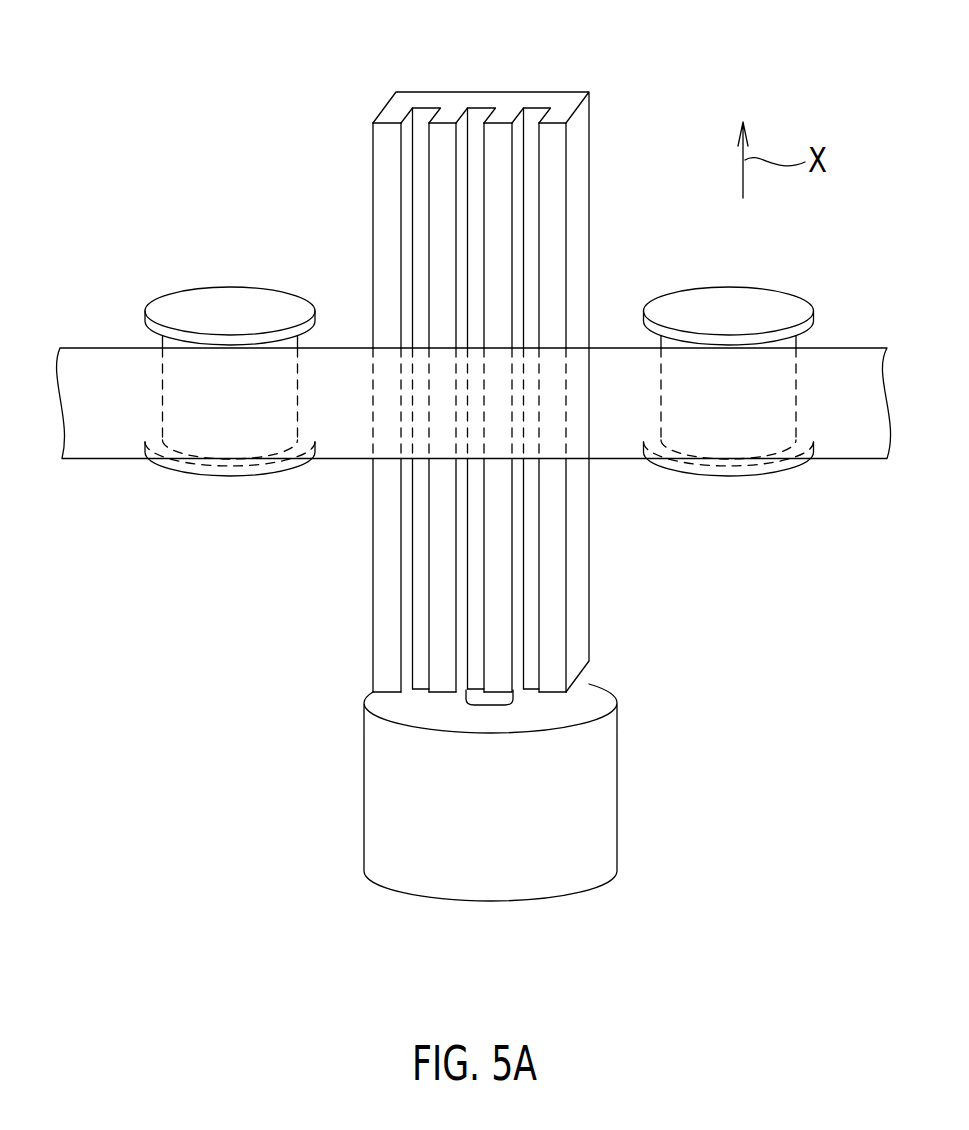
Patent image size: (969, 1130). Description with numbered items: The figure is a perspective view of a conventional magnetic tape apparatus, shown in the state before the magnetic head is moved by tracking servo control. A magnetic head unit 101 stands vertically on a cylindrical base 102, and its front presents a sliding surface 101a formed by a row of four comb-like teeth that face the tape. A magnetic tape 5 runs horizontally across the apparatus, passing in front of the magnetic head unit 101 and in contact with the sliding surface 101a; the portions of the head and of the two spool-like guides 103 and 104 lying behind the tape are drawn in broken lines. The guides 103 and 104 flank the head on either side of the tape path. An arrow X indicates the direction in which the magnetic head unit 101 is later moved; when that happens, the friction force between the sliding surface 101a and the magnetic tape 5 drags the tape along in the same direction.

The magnetic tape 5 is at (93, 372).
The magnetic head unit 101 is at (578, 145).
The sliding surface 101a is at (551, 130).
The cylindrical base 102 is at (595, 793).
The left spool / roller 103 is at (230, 302).
The right spool / roller 104 is at (728, 300).